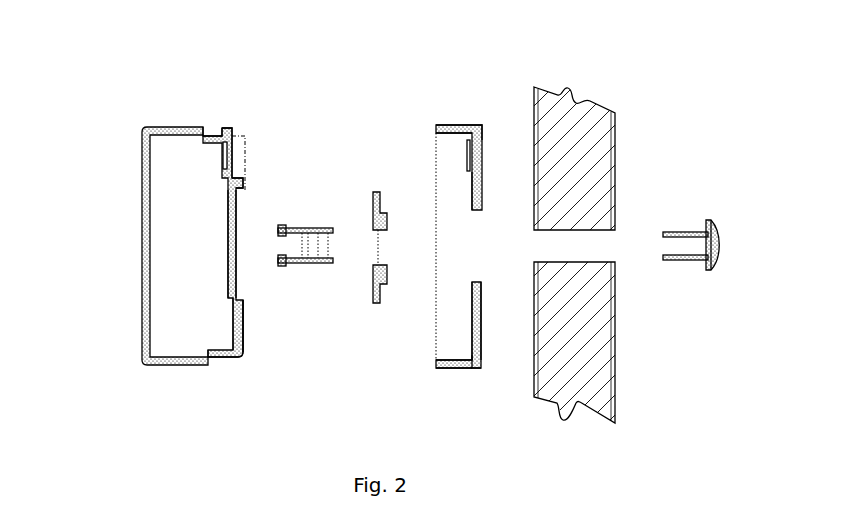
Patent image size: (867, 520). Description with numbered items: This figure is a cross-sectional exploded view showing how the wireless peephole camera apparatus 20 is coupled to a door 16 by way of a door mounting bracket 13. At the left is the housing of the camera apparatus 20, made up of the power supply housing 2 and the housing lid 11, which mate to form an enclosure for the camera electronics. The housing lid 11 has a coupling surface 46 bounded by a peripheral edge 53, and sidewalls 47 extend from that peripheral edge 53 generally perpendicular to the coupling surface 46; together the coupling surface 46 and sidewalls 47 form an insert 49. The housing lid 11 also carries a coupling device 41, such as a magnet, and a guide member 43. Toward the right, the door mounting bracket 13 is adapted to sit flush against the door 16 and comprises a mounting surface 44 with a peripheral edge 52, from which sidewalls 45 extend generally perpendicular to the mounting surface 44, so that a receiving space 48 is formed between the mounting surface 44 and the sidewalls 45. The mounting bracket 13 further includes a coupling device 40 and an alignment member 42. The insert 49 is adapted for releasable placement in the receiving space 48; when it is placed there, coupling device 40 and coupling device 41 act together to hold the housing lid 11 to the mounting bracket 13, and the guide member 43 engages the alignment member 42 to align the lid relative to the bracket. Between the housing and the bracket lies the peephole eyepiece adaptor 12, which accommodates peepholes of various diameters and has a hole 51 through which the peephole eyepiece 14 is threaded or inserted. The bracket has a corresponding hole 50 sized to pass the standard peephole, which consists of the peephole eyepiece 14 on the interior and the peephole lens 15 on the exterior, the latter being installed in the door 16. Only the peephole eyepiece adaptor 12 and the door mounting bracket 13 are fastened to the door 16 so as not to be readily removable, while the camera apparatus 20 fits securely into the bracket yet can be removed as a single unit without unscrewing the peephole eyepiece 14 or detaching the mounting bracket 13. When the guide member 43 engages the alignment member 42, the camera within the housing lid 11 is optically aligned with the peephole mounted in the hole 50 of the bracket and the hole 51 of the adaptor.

The power supply housing 2 is at (173, 126).
The camera apparatus 20 is at (106, 108).
The housing lid 11 is at (229, 250).
The peephole eyepiece adaptor 12 is at (372, 197).
The door mounting bracket 13 is at (482, 196).
The peephole eyepiece 14 is at (310, 228).
The peephole lens 15 is at (678, 236).
The door 16 is at (572, 130).
The coupling device 40 is at (466, 152).
The coupling device 41 is at (221, 155).
The alignment member 42 is at (469, 174).
The guide member 43 is at (244, 185).
The mounting surface 44 is at (471, 318).
The sidewalls 45 is at (440, 126).
The coupling surface 46 is at (241, 345).
The sidewalls 47 is at (219, 132).
The receiving space 48 is at (439, 250).
The insert 49 is at (250, 262).
The hole 50 is at (487, 256).
The hole 51 is at (394, 242).
The peripheral edge 52 is at (479, 127).
The peripheral edge 53 is at (234, 135).